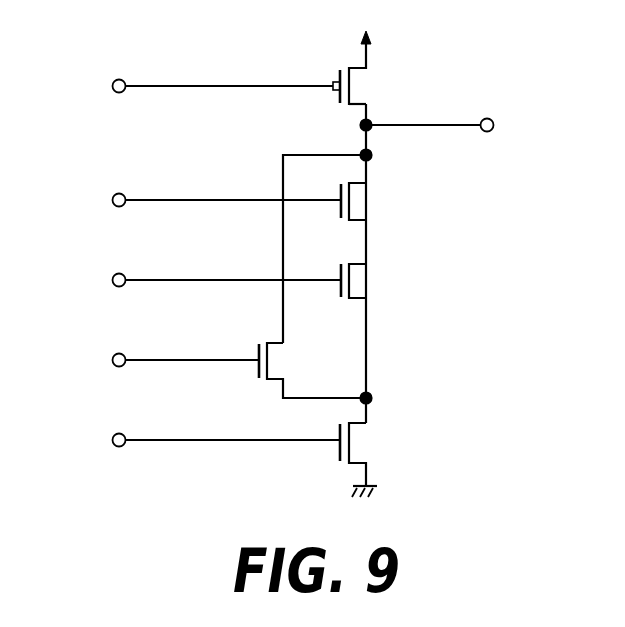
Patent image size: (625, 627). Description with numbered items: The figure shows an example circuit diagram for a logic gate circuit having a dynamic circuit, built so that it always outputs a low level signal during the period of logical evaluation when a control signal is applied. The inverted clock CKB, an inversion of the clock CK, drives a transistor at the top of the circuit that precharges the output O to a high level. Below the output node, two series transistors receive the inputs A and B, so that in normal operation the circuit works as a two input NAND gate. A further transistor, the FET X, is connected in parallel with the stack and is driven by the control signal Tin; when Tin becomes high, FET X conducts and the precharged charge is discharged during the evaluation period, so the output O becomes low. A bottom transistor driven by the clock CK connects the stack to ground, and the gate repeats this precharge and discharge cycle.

The inverted clock input signal CKB is at (204, 86).
The first input A is at (217, 200).
The second input B is at (217, 280).
The control signal Tin is at (159, 358).
The clock CK is at (214, 454).
The output O is at (453, 125).
The FET X is at (261, 334).